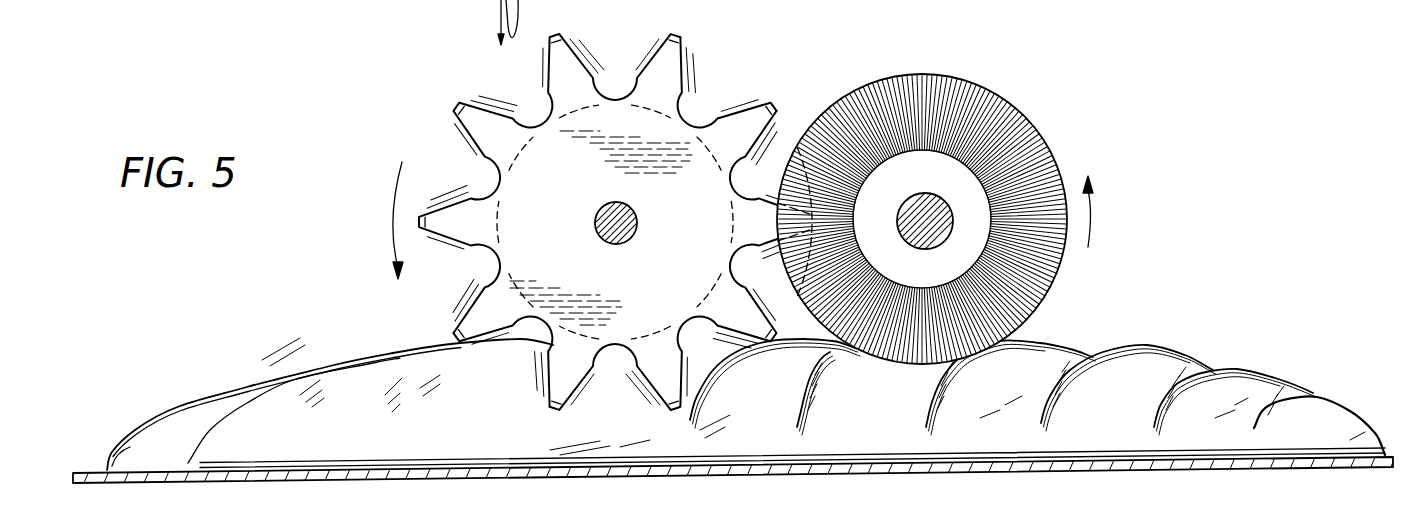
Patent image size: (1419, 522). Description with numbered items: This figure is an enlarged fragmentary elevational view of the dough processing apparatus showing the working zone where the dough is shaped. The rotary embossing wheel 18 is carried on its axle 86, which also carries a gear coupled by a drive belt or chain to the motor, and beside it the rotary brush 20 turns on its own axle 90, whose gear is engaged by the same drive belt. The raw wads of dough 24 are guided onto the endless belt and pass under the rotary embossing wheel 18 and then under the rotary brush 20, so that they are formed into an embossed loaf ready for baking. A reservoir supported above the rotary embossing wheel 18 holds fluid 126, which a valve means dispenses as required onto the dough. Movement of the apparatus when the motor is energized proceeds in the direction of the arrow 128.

The rotary embossing wheel 18 is at (423, 249).
The rotary brush 20 is at (1006, 120).
The wads of dough 24 is at (247, 398).
The axle of embossing wheel 86 is at (639, 222).
The axle of rotary brush 90 is at (921, 192).
The fluid 126 is at (521, 20).
The arrow 128 is at (781, 518).